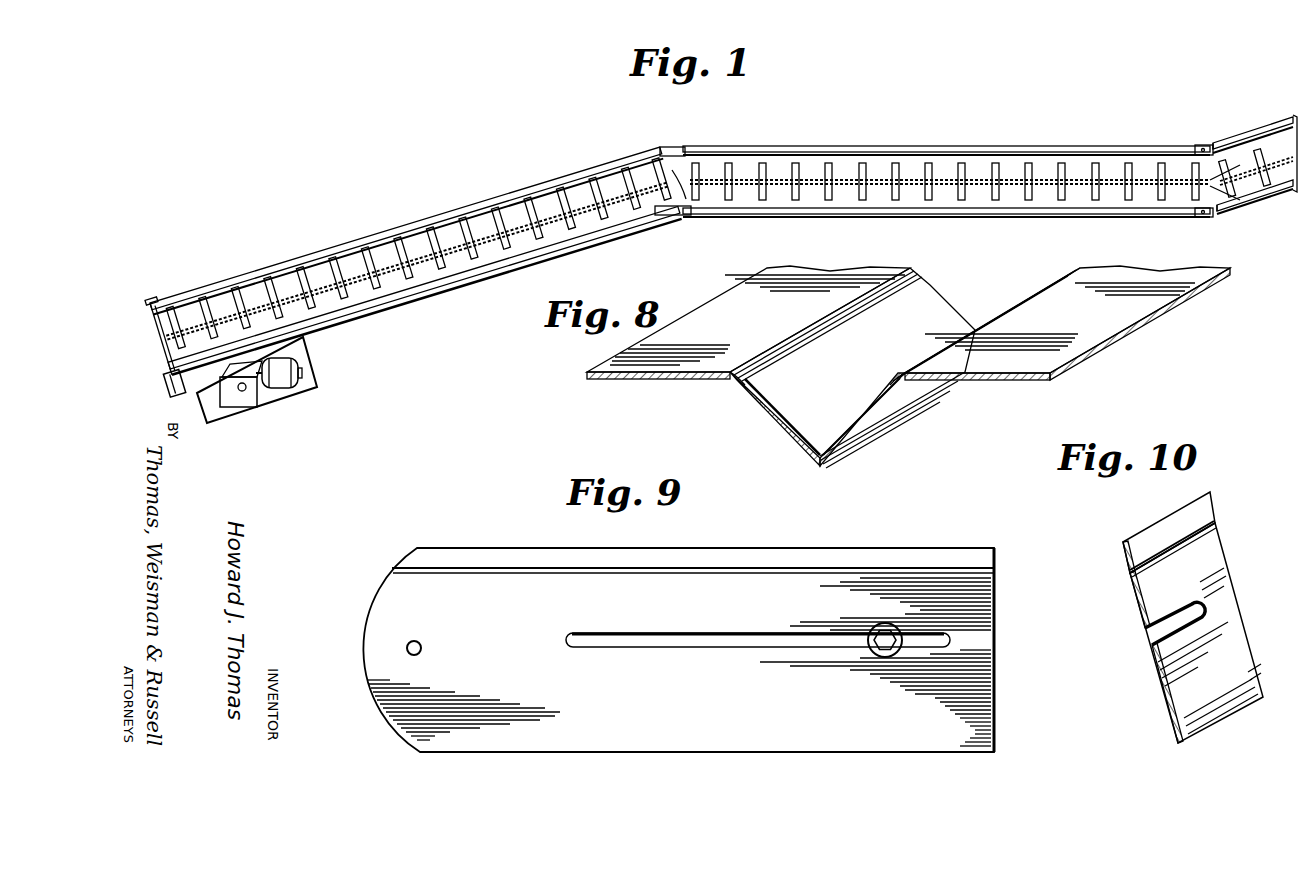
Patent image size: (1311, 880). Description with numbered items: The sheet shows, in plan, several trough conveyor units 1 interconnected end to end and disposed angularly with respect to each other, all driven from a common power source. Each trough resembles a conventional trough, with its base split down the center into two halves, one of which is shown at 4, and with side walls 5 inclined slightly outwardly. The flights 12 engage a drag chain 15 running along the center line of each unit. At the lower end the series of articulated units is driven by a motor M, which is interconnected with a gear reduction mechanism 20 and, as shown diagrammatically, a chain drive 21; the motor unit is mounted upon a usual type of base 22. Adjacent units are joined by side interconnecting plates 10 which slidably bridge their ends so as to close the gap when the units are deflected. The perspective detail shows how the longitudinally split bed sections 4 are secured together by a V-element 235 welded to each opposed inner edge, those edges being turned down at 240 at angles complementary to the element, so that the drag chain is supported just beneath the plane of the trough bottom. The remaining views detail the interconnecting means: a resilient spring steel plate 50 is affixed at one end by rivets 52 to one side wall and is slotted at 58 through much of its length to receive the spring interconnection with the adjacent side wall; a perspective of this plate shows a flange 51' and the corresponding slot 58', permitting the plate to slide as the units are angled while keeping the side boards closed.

In FIG. 1, the trough conveyor unit 1 is at (980, 165).
In FIG. 1, the trough base half 4 is at (1142, 158).
In FIG. 8, the trough base half 4 is at (660, 378).
In FIG. 1, the side wall 5 is at (1083, 152).
In FIG. 1, the side interconnecting plate 10 is at (1209, 143).
In FIG. 9, the side interconnecting plate 10 is at (785, 543).
In FIG. 1, the flight 12 is at (895, 202).
In FIG. 1, the drag chain 15 is at (578, 213).
In FIG. 1, the gear reduction mechanism 20 is at (240, 395).
In FIG. 1, the chain drive 21 is at (176, 392).
In FIG. 1, the base 22 is at (312, 387).
In FIG. 1, the motor M is at (286, 384).
In FIG. 8, the V-element 235 is at (795, 428).
In FIG. 8, the turned-down edge 240 is at (744, 394).
In FIG. 9, the spring plate 50 is at (530, 605).
In FIG. 10, the spring plate 50 is at (1188, 577).
In FIG. 10, the flange 51' is at (1189, 530).
In FIG. 9, the rivet 52 is at (420, 644).
In FIG. 9, the slot 58 is at (758, 627).
In FIG. 10, the slot 58' is at (1149, 625).